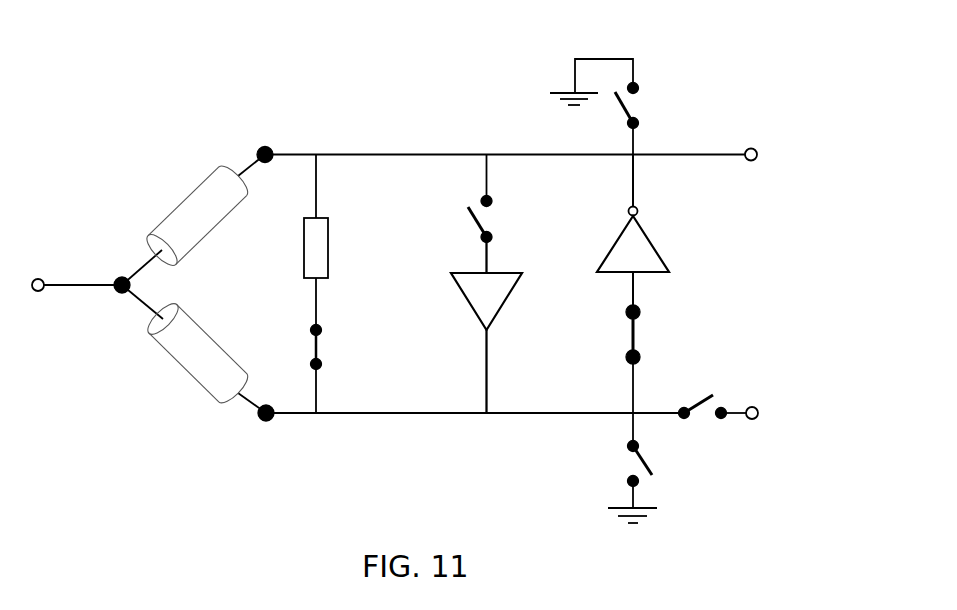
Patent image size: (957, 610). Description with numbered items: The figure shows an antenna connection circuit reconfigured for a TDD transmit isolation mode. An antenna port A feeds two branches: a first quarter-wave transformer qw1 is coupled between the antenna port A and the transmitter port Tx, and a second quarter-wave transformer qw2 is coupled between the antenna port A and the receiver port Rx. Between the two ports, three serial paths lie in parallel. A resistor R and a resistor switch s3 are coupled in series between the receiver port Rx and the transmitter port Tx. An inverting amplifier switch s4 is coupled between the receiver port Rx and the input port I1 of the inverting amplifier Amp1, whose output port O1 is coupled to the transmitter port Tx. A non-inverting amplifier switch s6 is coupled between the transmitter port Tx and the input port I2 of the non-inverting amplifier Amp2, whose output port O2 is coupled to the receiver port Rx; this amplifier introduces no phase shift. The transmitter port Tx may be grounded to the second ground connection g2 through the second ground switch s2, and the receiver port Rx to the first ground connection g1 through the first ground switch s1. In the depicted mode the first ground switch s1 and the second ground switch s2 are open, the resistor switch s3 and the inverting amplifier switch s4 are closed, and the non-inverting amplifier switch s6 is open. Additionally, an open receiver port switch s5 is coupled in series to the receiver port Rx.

The antenna port A is at (38, 277).
The first quarter-wave transformer qw1 is at (181, 200).
The second quarter-wave transformer qw2 is at (182, 367).
The resistor R is at (302, 257).
The resistor switch s3 is at (308, 363).
The non-inverting amplifier switch s6 is at (483, 238).
The non-inverting amplifier Amp2 is at (470, 307).
The input port of the non-inverting amplifier I2 is at (488, 271).
The output port of the non-inverting amplifier O2 is at (487, 340).
The second ground connection g2 is at (555, 93).
The second ground switch s2 is at (637, 120).
The transmitter port Tx is at (748, 145).
The output port of the inverting amplifier O1 is at (628, 210).
The inverting amplifier Amp1 is at (648, 237).
The input port of the inverting amplifier I1 is at (637, 272).
The inverting amplifier switch s4 is at (623, 358).
The open receiver port switch s5 is at (683, 408).
The receiver port Rx is at (752, 405).
The first ground switch s1 is at (640, 440).
The first ground connection g1 is at (657, 508).